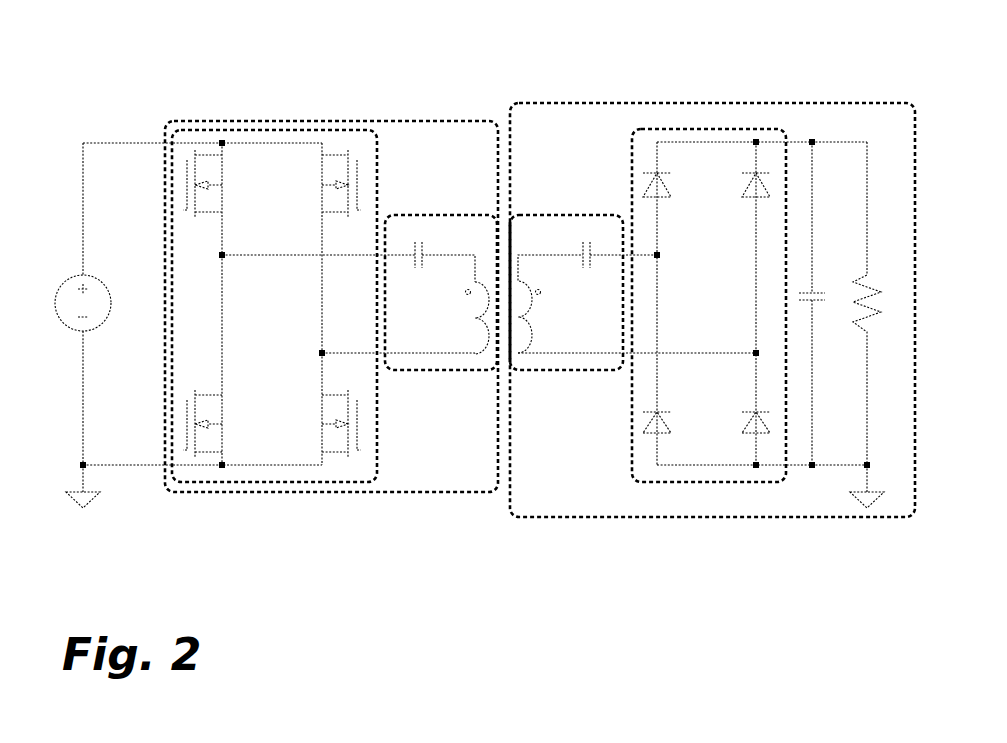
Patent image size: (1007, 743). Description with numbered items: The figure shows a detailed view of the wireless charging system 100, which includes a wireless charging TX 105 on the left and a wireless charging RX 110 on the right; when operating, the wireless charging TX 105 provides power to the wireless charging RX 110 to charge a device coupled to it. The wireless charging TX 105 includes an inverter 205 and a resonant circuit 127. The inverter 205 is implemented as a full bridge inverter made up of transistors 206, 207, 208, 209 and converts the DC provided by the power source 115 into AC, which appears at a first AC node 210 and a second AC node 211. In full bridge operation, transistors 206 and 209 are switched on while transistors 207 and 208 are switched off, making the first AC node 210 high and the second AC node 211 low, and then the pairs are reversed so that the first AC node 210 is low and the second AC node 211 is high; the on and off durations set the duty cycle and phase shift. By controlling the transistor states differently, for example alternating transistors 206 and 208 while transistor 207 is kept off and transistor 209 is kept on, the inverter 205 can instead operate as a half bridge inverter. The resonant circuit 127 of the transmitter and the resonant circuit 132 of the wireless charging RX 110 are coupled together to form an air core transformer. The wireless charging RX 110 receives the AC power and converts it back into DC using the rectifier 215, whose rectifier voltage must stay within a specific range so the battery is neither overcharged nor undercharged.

The wireless charging system 100 is at (860, 36).
The wireless charging TX 105 is at (268, 120).
The wireless charging RX 110 is at (638, 103).
The power source 115 is at (110, 308).
The resonant circuit 127 is at (457, 215).
The resonant circuit 132 is at (547, 215).
The inverter 205 is at (377, 165).
The rectifier 215 is at (630, 143).
The transistor 206 is at (259, 206).
The transistor 207 is at (317, 206).
The transistor 208 is at (259, 441).
The transistor 209 is at (317, 441).
The AC1 210 is at (262, 346).
The AC2 211 is at (367, 346).